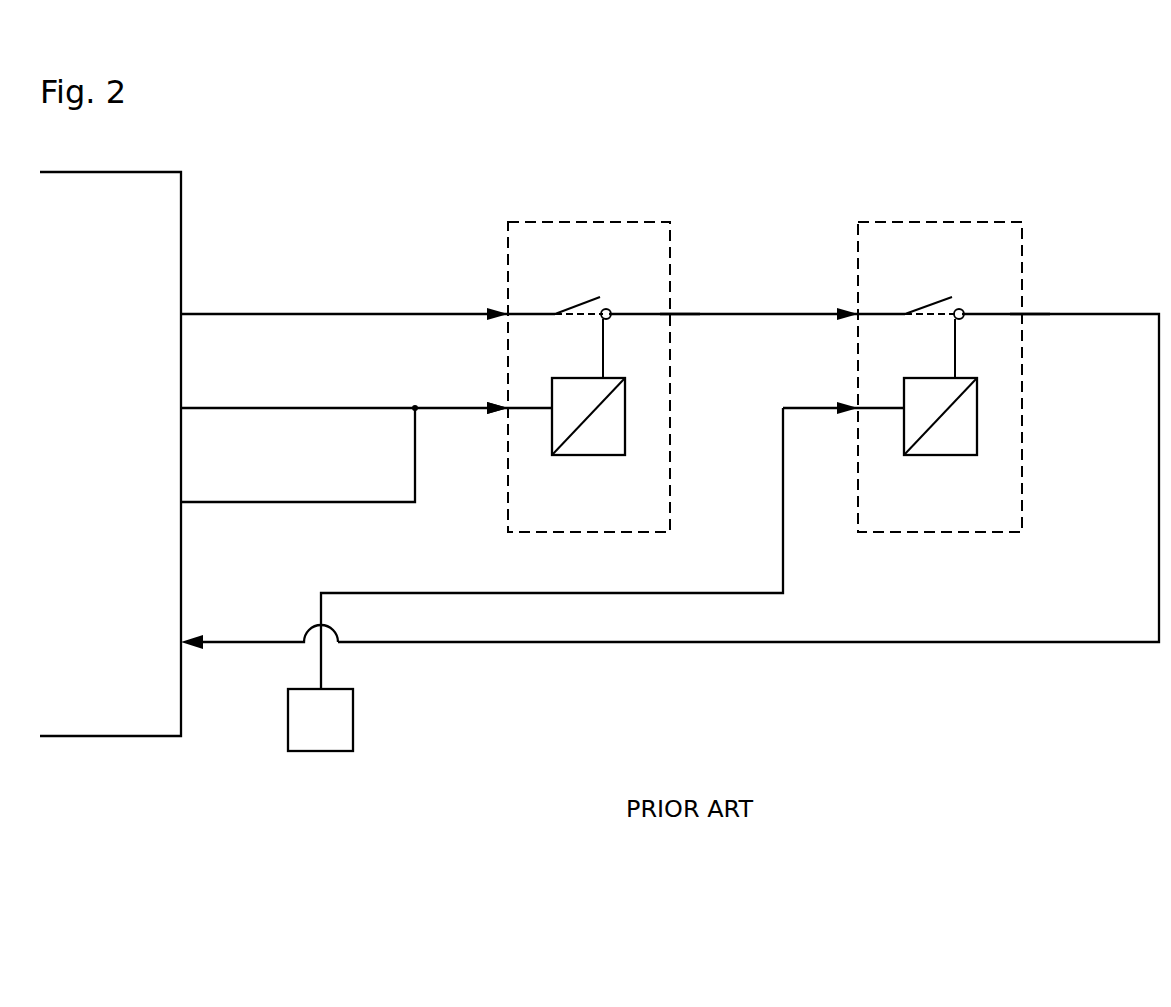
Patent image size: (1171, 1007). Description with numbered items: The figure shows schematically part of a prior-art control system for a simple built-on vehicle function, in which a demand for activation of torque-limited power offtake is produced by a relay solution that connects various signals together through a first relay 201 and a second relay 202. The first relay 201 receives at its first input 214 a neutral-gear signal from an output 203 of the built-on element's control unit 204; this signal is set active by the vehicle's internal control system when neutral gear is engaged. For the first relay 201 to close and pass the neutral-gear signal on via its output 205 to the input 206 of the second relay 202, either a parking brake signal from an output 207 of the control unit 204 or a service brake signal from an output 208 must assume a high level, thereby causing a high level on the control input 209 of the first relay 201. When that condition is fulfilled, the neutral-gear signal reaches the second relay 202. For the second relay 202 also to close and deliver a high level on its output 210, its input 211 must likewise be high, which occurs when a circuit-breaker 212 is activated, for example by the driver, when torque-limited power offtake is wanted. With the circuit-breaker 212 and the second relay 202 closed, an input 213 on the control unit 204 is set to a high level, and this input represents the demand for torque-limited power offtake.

The first relay 201 is at (604, 233).
The second relay 202 is at (954, 231).
The output of built-on element's control unit 203 is at (182, 313).
The built-on element's control unit 204 is at (150, 156).
The output of first relay 205 is at (671, 314).
The input of second relay 206 is at (857, 313).
The output for parking brake signal 207 is at (182, 407).
The output for service brake signal 208 is at (182, 501).
The control input of first relay 209 is at (506, 410).
The output of second relay 210 is at (1023, 314).
The input of second relay 211 is at (850, 412).
The circuit-breaker 212 is at (354, 722).
The input of built-on element's control unit 213 is at (182, 641).
The first input of first relay 214 is at (507, 313).